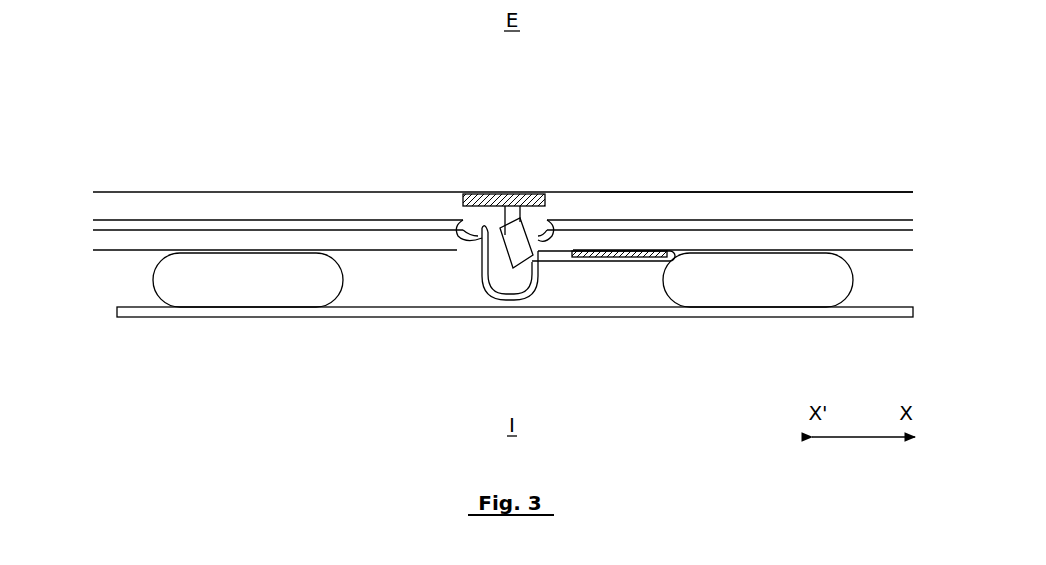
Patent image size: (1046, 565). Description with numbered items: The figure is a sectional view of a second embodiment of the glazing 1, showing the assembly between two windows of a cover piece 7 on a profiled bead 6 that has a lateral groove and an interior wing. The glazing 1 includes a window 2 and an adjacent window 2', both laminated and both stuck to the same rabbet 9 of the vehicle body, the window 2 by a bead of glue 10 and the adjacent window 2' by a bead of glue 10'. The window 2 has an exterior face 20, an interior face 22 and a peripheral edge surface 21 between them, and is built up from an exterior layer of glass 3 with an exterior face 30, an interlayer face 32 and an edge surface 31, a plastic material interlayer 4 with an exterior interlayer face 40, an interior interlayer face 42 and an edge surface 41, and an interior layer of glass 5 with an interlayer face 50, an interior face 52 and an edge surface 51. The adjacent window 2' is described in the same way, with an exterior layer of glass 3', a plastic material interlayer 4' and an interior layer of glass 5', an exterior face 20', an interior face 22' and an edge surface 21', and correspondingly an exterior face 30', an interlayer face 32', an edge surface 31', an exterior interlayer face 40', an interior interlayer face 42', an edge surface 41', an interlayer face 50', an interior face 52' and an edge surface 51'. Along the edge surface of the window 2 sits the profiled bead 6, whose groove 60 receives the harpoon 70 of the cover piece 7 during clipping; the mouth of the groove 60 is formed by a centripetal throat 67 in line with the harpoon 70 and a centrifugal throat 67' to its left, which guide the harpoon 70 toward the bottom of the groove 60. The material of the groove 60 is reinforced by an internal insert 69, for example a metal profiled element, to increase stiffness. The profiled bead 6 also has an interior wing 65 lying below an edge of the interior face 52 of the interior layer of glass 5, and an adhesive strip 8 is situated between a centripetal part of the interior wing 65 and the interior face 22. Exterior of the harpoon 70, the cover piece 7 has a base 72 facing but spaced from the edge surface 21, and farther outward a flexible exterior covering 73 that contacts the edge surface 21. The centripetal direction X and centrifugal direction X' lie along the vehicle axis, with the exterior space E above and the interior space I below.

The glazing 1 is at (443, 74).
The window 2 is at (751, 236).
The adjacent window 2' is at (478, 236).
The exterior layer of glass 3 is at (779, 158).
The exterior layer of glass 3' is at (478, 159).
The plastic material interlayer 4 is at (748, 188).
The plastic material interlayer 4' is at (262, 188).
The interior layer of glass 5 is at (768, 310).
The interior layer of glass 5' is at (251, 309).
The profiled bead 6 is at (512, 322).
The cover piece 7 is at (493, 166).
The adhesive strip 8 is at (617, 319).
The rabbet 9 is at (345, 316).
The bead of glue 10 is at (758, 308).
The bead of glue 10' is at (248, 308).
The exterior face 20 is at (779, 158).
The exterior face 20' is at (478, 159).
The peripheral edge surface 21 is at (647, 179).
The edge surface 21' is at (374, 182).
The interior face 22 is at (768, 310).
The interior face 22' is at (251, 309).
The exterior face 30 is at (779, 158).
The exterior face 30' is at (478, 159).
The edge surface 31 is at (586, 162).
The edge surface 31' is at (411, 169).
The interlayer face 32 is at (748, 188).
The interlayer face 32' is at (262, 188).
The exterior interlayer face 40 is at (748, 188).
The exterior interlayer face 40' is at (262, 188).
The edge surface 41 is at (597, 184).
The edge surface 41' is at (414, 255).
The interior interlayer face 42 is at (768, 310).
The interior interlayer face 42' is at (251, 309).
The interlayer face 50 is at (768, 310).
The interlayer face 50' is at (251, 309).
The edge surface 51 is at (502, 299).
The edge surface 51' is at (502, 299).
The interior face 52 is at (768, 310).
The interior face 52' is at (251, 309).
The groove 60 is at (502, 299).
The interior wing 65 is at (617, 319).
The centripetal throat 67 is at (502, 299).
The centrifugal throat 67' is at (502, 299).
The insert 69 is at (619, 266).
The harpoon 70 is at (463, 135).
The base 72 is at (521, 166).
The exterior covering 73 is at (521, 166).